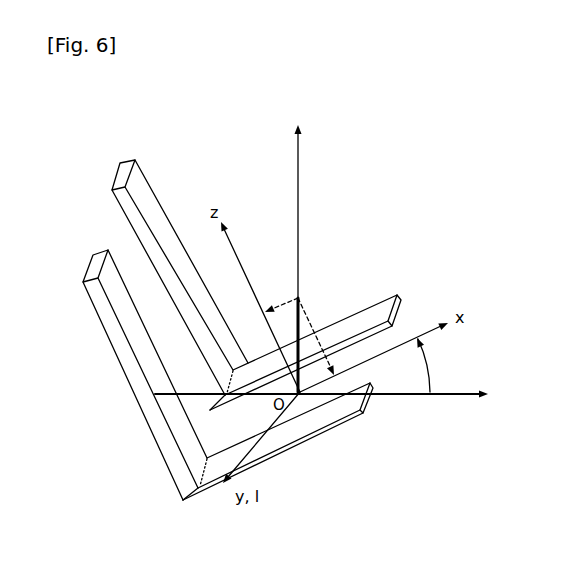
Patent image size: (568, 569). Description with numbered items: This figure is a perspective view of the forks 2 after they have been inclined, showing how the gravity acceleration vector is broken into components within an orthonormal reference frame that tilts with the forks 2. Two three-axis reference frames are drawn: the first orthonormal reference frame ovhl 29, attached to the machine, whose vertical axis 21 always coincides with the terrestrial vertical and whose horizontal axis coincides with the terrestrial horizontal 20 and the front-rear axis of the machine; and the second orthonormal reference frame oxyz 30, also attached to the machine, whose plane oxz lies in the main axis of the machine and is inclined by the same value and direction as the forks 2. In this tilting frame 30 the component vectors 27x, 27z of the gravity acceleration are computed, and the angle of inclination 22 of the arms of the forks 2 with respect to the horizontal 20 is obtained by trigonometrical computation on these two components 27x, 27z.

The forks 2 is at (270, 327).
The horizontal 20 is at (448, 397).
The vertical axis 21 is at (298, 180).
The angle of inclination 22 is at (435, 363).
The component vector of the gravity acceleration 27x is at (271, 307).
The component vector of the gravity acceleration 27z is at (310, 322).
The first orthonormal reference frame ovhl 29 is at (368, 437).
The second orthonormal reference frame oxyz 30 is at (343, 454).